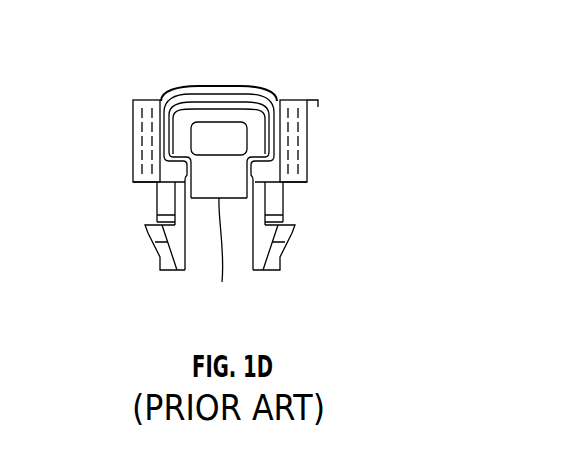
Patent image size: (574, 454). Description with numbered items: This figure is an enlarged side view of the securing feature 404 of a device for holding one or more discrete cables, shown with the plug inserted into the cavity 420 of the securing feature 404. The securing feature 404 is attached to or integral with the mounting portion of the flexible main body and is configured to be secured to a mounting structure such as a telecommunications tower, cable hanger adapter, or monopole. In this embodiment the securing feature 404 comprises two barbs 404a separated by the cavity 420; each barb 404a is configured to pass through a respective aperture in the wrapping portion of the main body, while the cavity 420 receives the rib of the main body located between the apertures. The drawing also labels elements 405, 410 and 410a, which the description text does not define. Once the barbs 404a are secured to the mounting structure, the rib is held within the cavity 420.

The securing feature 404 is at (353, 62).
The barbs 404a is at (150, 238).
The shoulders 405 is at (172, 178).
The body 410 is at (246, 118).
The stem 410a is at (221, 258).
The cavity 420 is at (284, 143).